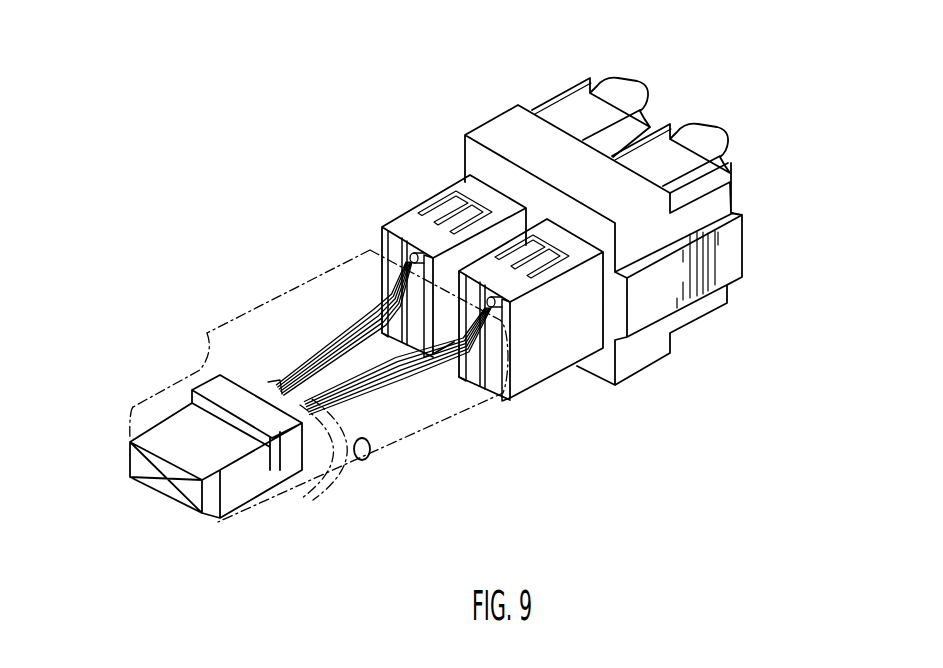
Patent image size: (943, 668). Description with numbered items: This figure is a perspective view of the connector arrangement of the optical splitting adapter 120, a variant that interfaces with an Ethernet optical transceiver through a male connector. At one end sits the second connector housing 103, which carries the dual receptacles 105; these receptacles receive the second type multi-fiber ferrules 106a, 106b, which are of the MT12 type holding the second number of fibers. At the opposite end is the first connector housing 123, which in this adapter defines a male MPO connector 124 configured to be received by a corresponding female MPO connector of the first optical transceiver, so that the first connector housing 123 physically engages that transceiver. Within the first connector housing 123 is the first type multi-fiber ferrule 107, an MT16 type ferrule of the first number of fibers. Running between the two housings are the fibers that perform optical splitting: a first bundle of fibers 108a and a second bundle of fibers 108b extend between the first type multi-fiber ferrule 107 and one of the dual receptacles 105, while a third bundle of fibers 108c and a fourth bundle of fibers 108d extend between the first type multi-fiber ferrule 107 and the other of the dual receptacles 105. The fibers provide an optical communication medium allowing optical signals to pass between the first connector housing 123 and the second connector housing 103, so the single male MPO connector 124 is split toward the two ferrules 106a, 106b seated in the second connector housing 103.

The second connector housing 103 is at (733, 248).
The dual receptacles 105 is at (742, 95).
The second type multi-fiber ferrule 106a is at (413, 248).
The second type multi-fiber ferrule 106b is at (490, 280).
The first type multi-fiber ferrule 107 is at (283, 410).
The first bundle of fibers 108a is at (445, 357).
The second bundle of fibers 108b is at (425, 362).
The third bundle of fibers 108c is at (372, 336).
The fourth bundle of fibers 108d is at (392, 333).
The optical splitting adapter 120 is at (135, 291).
The first connector housing 123 is at (208, 340).
The male MPO connector 124 is at (158, 489).